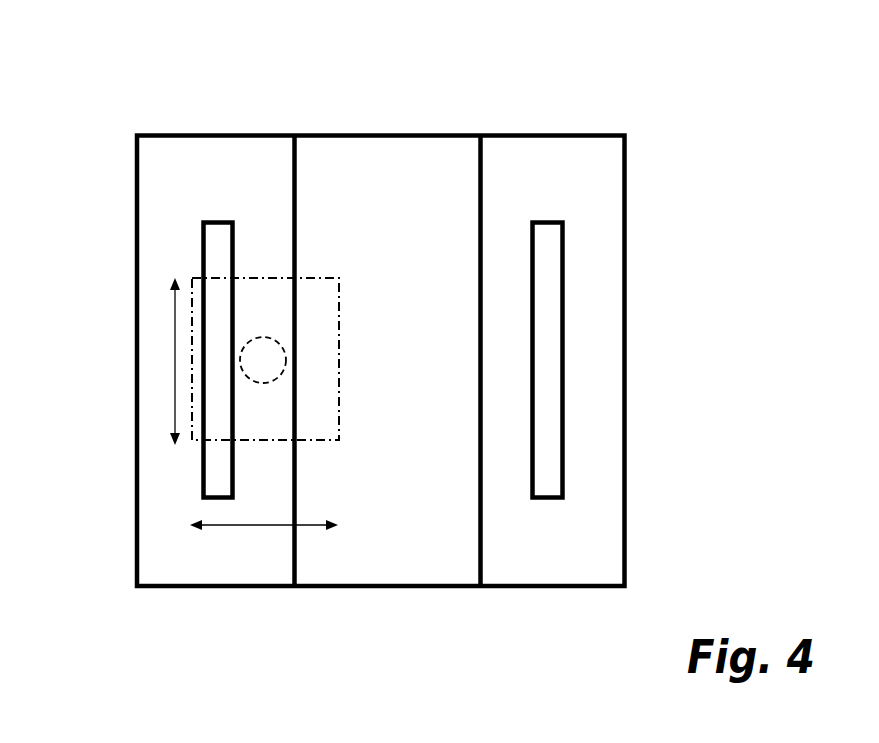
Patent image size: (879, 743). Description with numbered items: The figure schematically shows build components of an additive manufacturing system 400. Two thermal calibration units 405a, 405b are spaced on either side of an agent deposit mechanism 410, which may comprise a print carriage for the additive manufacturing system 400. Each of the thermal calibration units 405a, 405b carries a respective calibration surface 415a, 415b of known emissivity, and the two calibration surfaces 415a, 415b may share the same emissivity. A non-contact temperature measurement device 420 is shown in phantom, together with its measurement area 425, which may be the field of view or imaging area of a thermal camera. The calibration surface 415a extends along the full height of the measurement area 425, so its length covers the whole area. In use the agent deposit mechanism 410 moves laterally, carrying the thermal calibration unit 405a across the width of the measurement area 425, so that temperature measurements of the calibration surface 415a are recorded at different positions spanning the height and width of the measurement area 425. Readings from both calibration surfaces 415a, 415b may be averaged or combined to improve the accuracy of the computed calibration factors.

The additive manufacturing system 400 is at (146, 47).
The agent deposit mechanism 410 is at (425, 135).
The thermal calibration unit 405a is at (252, 133).
The thermal calibration unit 405b is at (627, 192).
The calibration surface 415a is at (200, 222).
The calibration surface 415b is at (565, 417).
The non-contact temperature measurement device 420 is at (279, 344).
The measurement area 425 is at (342, 327).